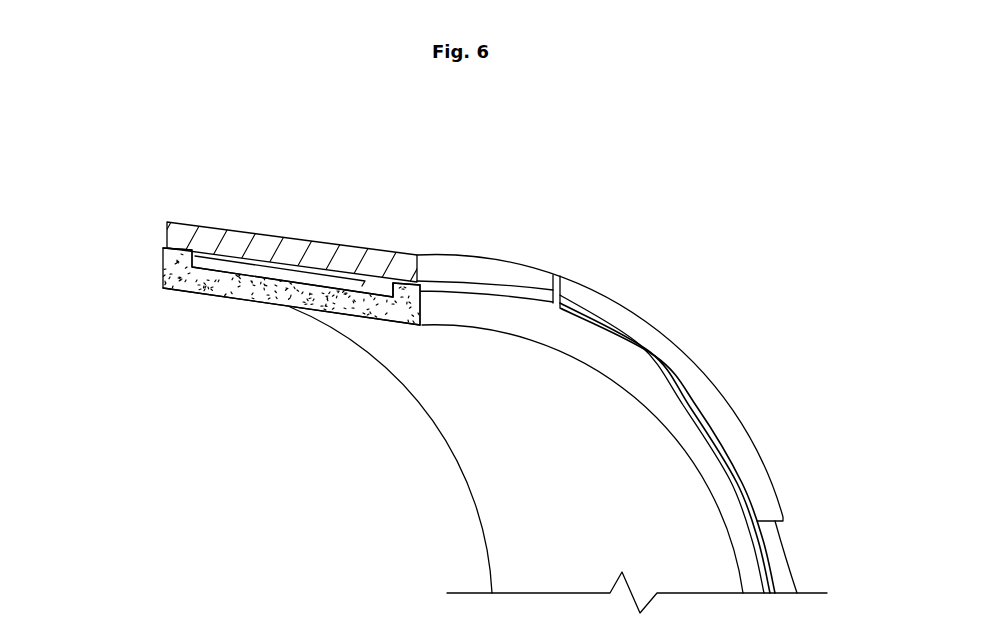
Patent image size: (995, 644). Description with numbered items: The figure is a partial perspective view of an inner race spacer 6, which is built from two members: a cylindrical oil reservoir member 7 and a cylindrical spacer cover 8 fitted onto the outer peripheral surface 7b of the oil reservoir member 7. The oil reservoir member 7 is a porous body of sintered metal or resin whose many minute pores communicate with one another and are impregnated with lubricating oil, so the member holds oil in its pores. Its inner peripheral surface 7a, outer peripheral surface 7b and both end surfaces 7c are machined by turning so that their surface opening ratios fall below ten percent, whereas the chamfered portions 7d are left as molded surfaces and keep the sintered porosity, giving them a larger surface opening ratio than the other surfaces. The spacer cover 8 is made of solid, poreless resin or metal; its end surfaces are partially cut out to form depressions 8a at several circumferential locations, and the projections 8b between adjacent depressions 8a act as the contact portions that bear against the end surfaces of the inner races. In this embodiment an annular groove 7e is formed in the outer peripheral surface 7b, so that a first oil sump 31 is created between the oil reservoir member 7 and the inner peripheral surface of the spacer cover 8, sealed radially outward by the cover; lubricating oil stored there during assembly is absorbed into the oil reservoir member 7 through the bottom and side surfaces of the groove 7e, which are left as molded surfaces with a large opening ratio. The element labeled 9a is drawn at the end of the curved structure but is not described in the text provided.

The inner race spacer 6 is at (688, 276).
The oil reservoir member 7 is at (213, 298).
The inner peripheral surface 7a is at (250, 307).
The outer peripheral surface 7b is at (397, 283).
The end surface 7c is at (162, 272).
The chamfered portion 7d is at (163, 248).
The annular groove 7e is at (288, 275).
The spacer cover 8 is at (243, 225).
The depression 8a is at (477, 270).
The projection 8b is at (739, 413).
The end segment 9a is at (778, 553).
The first oil sump 31 is at (370, 285).